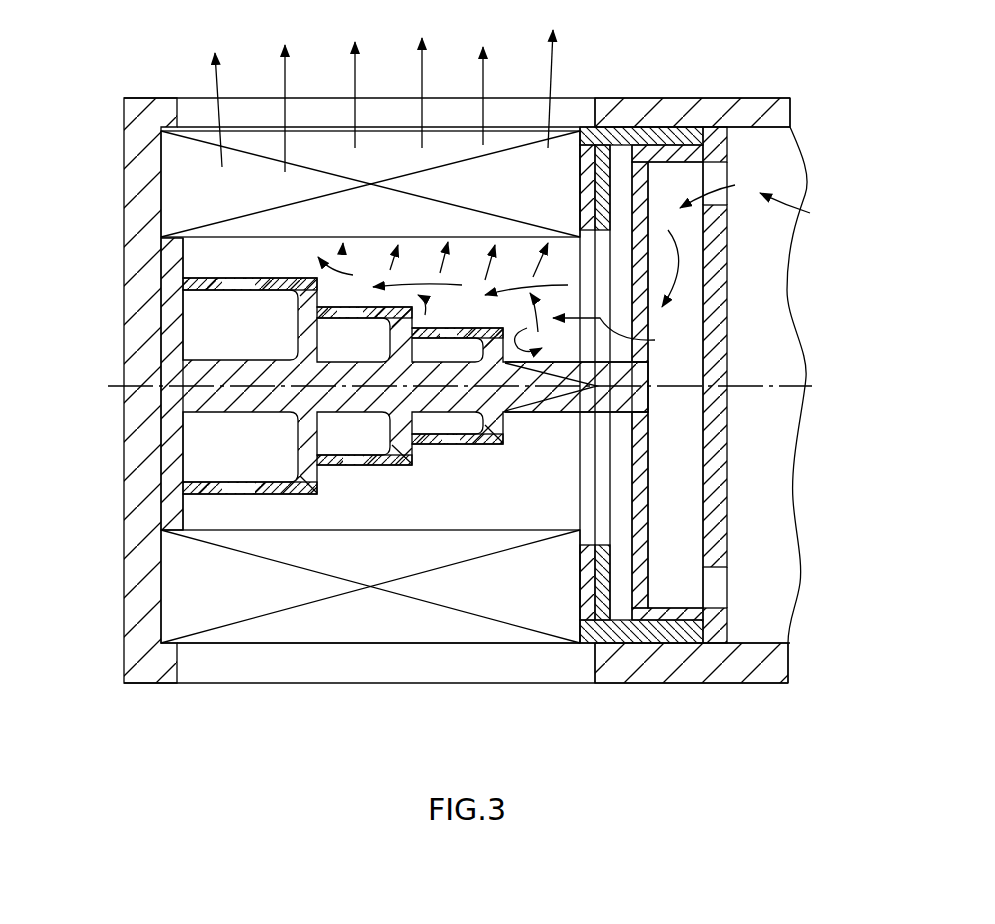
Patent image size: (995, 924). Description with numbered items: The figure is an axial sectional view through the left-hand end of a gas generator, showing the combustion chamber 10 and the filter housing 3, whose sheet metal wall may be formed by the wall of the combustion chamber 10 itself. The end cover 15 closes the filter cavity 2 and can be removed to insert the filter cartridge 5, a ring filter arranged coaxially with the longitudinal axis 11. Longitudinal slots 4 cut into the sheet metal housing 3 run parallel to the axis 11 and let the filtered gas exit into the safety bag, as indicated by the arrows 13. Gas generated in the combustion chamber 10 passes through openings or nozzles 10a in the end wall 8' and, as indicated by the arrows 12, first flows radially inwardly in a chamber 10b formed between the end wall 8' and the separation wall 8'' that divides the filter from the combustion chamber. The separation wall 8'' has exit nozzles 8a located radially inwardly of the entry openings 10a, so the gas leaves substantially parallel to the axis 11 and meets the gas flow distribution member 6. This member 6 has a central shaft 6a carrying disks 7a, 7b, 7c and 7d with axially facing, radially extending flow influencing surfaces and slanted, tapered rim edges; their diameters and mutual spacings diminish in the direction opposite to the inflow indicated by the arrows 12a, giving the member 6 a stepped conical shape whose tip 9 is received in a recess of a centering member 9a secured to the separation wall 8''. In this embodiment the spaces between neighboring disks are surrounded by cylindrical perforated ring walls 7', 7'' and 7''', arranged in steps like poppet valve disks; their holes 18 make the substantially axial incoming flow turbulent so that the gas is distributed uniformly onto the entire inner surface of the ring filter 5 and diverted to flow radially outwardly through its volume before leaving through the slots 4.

The filter cavity 2 is at (352, 517).
The filter housing 3 is at (683, 107).
The longitudinal slots 4 is at (451, 110).
The filter cartridge 5 is at (328, 140).
The gas flow distribution member 6 is at (483, 455).
The central shaft 6a is at (222, 400).
The gas flow distribution disk 7a is at (170, 277).
The gas flow distribution disk 7b is at (308, 443).
The gas flow distribution disk 7c is at (408, 462).
The gas flow distribution disk 7d is at (502, 427).
The perforated ring wall 7' is at (280, 401).
The perforated ring wall 7'' is at (398, 407).
The perforated ring wall 7''' is at (482, 424).
The end wall 8' is at (734, 385).
The separation wall 8'' is at (667, 533).
The exit openings or nozzles 8a is at (642, 267).
The tip 9 is at (613, 380).
The centering member 9a is at (612, 432).
The combustion chamber 10 is at (778, 283).
The openings or nozzles 10a is at (720, 178).
The chamber 10b is at (687, 406).
The longitudinal axis 11 is at (806, 386).
The generated gas flow arrows 12 is at (748, 250).
The inflowing gas arrows 12a is at (631, 337).
The filtered gas exit arrows 13 is at (224, 97).
The end cover 15 is at (143, 200).
The perforations 18 is at (256, 284).